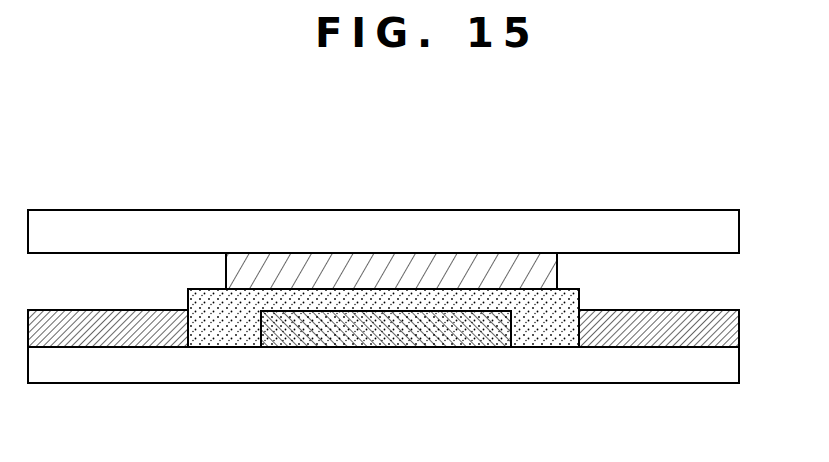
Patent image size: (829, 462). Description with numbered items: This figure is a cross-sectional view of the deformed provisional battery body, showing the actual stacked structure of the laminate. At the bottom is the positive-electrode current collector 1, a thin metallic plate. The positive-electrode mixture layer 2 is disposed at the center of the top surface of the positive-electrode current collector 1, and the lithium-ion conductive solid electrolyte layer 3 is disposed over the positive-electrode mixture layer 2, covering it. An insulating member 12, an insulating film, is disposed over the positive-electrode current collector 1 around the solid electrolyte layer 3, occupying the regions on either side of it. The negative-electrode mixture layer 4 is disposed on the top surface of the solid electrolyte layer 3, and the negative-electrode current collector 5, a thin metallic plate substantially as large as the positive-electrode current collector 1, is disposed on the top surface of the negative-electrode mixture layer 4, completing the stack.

The positive-electrode current collector 1 is at (739, 365).
The positive-electrode mixture layer 2 is at (495, 346).
The solid electrolyte layer 3 is at (565, 340).
The negative-electrode mixture layer 4 is at (557, 267).
The negative-electrode current collector 5 is at (739, 228).
The insulating member 12 is at (717, 310).